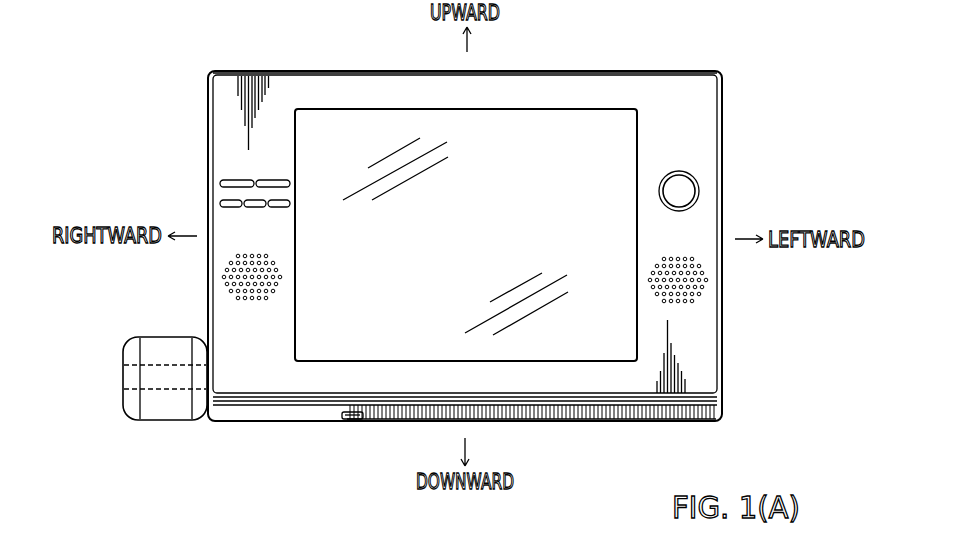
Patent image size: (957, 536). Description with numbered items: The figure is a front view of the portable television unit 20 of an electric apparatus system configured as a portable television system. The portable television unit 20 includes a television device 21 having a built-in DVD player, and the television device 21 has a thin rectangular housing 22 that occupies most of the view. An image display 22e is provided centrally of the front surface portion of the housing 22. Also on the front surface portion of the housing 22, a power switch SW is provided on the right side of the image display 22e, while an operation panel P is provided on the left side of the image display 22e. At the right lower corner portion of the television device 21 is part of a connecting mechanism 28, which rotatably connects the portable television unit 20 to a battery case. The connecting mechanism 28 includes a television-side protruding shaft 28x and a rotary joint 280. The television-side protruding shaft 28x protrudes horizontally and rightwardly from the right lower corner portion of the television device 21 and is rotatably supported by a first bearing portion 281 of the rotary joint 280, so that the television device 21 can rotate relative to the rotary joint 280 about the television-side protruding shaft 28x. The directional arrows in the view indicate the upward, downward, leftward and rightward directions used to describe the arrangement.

The portable television unit 20 is at (711, 53).
The television device 21 is at (405, 61).
The housing 22 is at (684, 138).
The image display 22e is at (525, 148).
The power switch SW is at (681, 191).
The operation panel P is at (240, 181).
The connecting mechanism 28 is at (178, 327).
The rotary joint 280 is at (163, 352).
The first bearing portion 281 is at (151, 365).
The television-side protruding shaft 28x is at (164, 378).